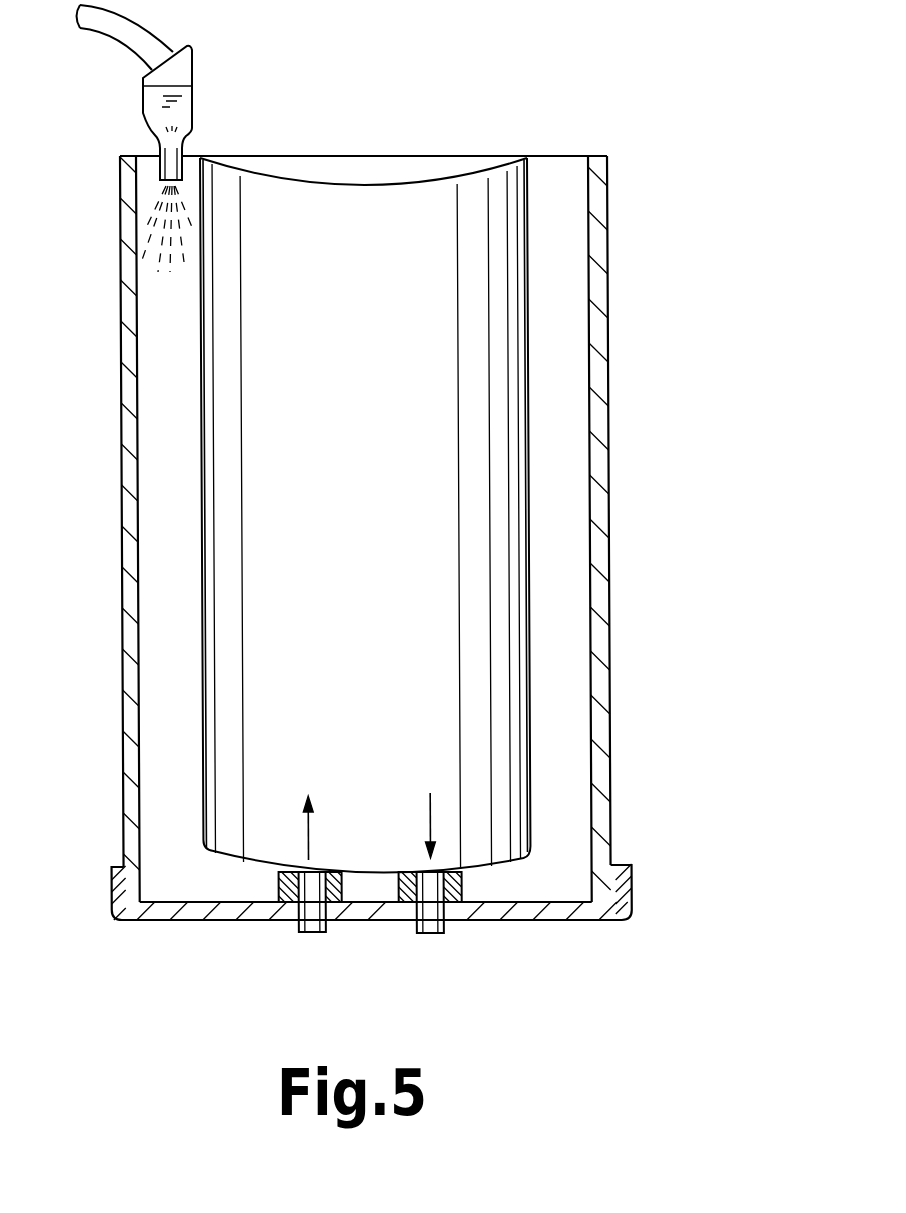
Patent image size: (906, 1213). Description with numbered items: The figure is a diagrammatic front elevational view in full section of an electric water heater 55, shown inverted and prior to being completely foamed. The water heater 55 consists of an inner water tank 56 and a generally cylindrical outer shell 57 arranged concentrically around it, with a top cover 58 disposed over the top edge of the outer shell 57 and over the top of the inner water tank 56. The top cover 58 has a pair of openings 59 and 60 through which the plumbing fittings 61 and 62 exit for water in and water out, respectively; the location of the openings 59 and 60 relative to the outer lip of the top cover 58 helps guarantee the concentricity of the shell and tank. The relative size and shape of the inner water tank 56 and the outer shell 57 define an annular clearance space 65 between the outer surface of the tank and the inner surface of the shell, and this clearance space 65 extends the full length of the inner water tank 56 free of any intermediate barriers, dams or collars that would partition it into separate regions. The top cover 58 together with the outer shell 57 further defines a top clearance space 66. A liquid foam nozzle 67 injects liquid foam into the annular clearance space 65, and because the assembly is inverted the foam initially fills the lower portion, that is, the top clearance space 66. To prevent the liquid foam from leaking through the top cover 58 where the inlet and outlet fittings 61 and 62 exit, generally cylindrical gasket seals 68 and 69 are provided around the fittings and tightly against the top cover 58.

The water heater 55 is at (688, 409).
The inner water tank 56 is at (513, 683).
The outer shell 57 is at (604, 757).
The top cover 58 is at (628, 883).
The opening 59 is at (290, 921).
The opening 60 is at (410, 922).
The plumbing fitting 61 is at (305, 936).
The plumbing fitting 62 is at (430, 940).
The annular clearance space 65 is at (578, 349).
The top clearance space 66 is at (250, 892).
The liquid foam nozzle 67 is at (185, 77).
The gasket seal 68 is at (338, 888).
The gasket seal 69 is at (458, 885).